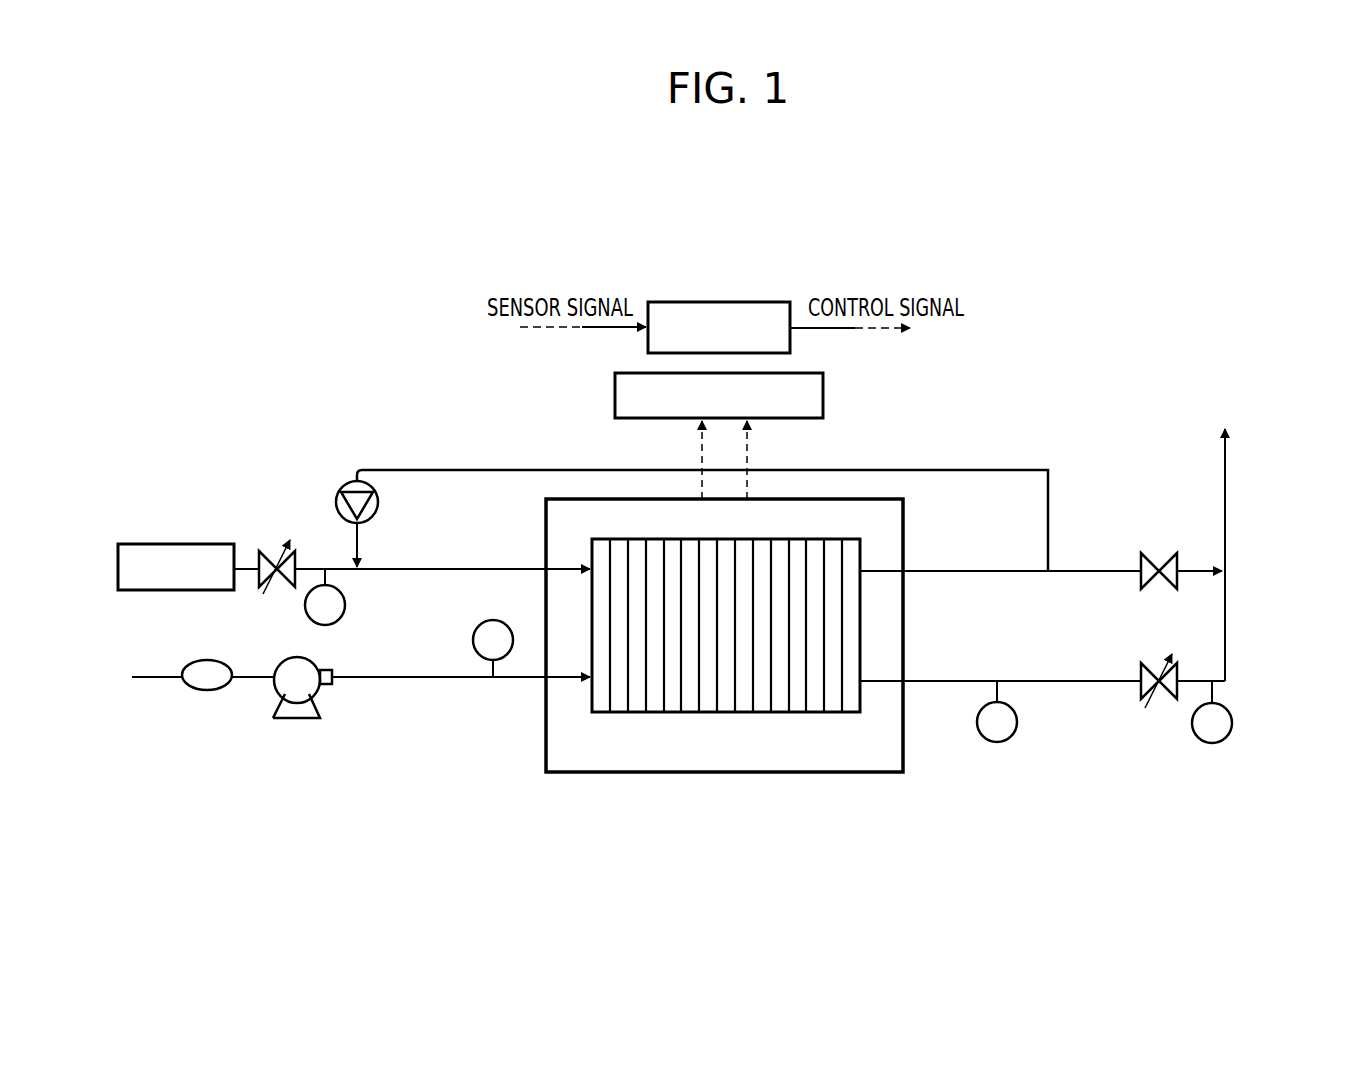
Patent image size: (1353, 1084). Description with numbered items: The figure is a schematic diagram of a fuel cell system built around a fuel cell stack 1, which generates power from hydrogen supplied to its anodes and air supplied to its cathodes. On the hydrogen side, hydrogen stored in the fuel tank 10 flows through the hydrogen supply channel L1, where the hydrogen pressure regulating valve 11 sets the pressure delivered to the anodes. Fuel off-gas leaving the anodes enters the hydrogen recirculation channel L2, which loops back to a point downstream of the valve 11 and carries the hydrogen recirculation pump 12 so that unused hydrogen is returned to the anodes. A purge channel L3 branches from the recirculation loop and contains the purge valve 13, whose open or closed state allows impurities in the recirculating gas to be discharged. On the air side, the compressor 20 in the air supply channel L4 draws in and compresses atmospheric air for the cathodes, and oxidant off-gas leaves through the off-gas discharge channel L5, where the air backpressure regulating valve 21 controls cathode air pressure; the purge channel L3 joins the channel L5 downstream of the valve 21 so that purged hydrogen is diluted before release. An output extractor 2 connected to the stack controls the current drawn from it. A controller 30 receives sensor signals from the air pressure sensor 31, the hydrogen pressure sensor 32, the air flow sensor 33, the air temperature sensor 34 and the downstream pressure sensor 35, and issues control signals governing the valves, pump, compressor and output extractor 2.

The fuel cell stack 1 is at (788, 772).
The output extractor 2 is at (823, 396).
The fuel tank 10 is at (182, 543).
The hydrogen pressure regulating valve 11 is at (272, 545).
The hydrogen recirculation pump 12 is at (378, 502).
The purge valve 13 is at (1158, 550).
The compressor 20 is at (297, 720).
The air backpressure regulating valve 21 is at (1166, 702).
The controller 30 is at (721, 300).
The air pressure sensor 31 is at (494, 620).
The hydrogen pressure sensor 32 is at (341, 617).
The air flow sensor 33 is at (205, 690).
The air temperature sensor 34 is at (995, 742).
The downstream pressure sensor 35 is at (1232, 723).
The hydrogen supply channel L1 is at (410, 572).
The hydrogen recirculation channel L2 is at (945, 468).
The purge channel L3 is at (1090, 575).
The air supply channel L4 is at (405, 680).
The off-gas discharge channel L5 is at (1225, 640).